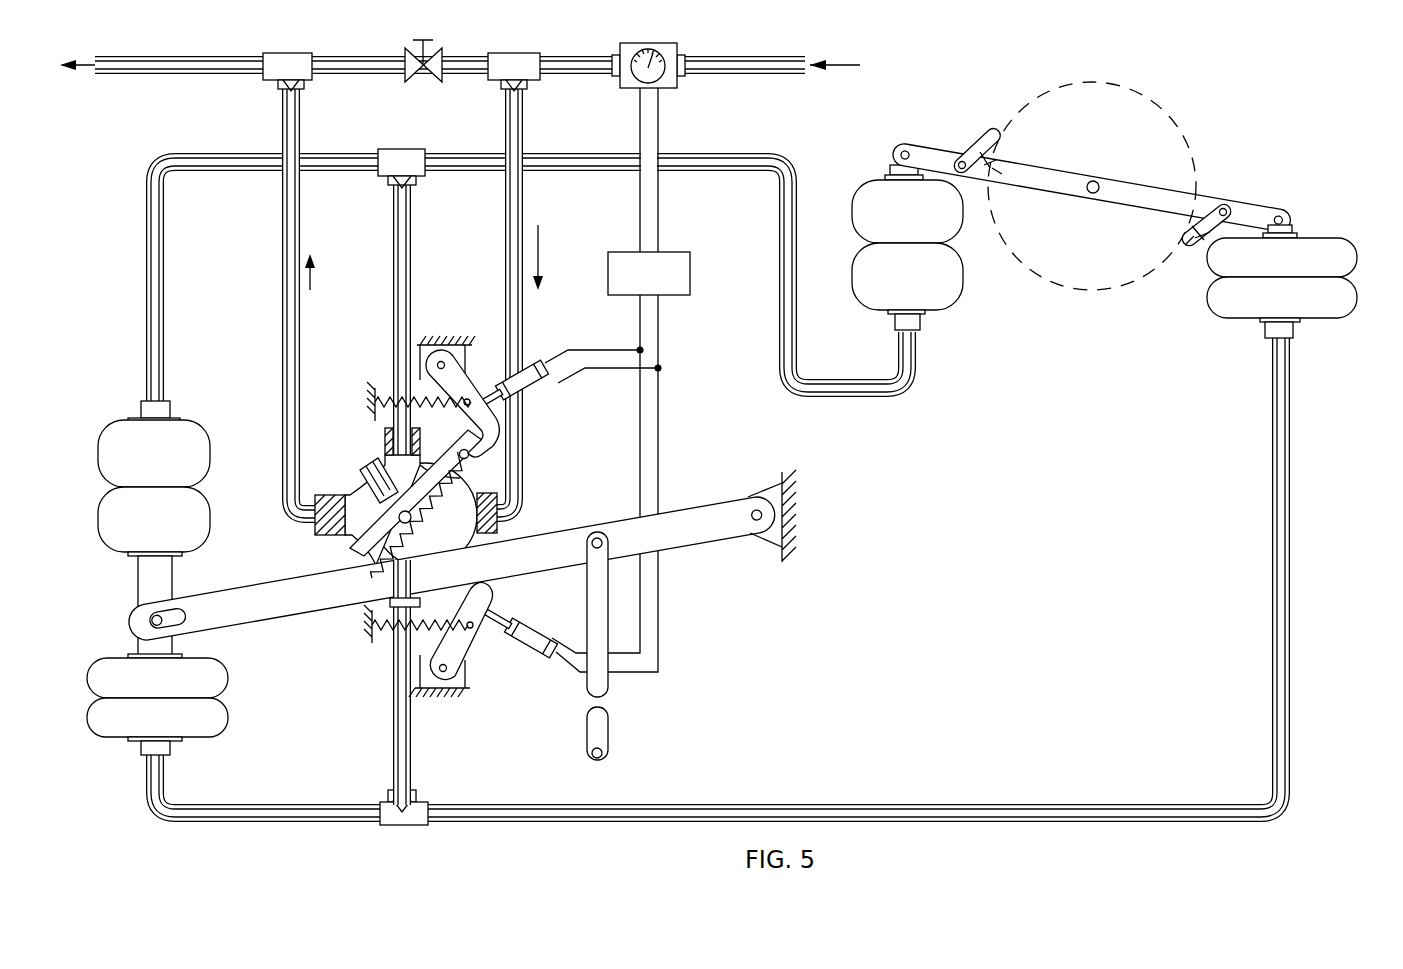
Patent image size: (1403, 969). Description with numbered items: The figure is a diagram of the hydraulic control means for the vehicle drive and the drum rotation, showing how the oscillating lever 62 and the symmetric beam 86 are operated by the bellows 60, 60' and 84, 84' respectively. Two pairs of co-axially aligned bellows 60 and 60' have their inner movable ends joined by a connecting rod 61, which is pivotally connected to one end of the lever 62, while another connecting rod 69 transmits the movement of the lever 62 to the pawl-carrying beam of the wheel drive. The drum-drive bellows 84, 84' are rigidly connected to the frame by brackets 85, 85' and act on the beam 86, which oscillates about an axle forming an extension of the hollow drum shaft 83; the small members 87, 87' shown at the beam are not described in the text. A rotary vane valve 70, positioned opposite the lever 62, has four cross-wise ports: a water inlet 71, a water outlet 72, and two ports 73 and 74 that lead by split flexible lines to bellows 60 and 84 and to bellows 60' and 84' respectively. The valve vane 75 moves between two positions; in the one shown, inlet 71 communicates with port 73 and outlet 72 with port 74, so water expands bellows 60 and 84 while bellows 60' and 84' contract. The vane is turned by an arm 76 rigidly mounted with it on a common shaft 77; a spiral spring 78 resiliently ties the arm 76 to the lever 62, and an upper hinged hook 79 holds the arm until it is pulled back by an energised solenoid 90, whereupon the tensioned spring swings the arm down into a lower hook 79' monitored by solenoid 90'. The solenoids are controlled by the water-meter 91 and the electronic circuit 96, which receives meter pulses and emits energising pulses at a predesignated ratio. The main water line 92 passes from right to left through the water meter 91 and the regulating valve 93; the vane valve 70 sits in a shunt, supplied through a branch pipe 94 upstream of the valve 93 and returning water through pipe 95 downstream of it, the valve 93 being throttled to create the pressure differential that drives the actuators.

The bellows 60 is at (179, 478).
The bellows 60' is at (190, 704).
The connecting rod 61 is at (145, 590).
The oscillating lever 62 is at (283, 604).
The connecting rod 69 is at (602, 724).
The rotary vane valve 70 is at (340, 535).
The water inlet 71 is at (500, 523).
The water outlet 72 is at (312, 520).
The port 73 is at (392, 442).
The port 74 is at (420, 603).
The valve vane 75 is at (368, 478).
The arm 76 is at (436, 478).
The common shaft 77 is at (415, 522).
The spiral spring 78 is at (468, 477).
The upper hinged hook 79 is at (438, 396).
The lower hinged hook 79' is at (443, 639).
The hollow drum shaft 83 is at (1096, 182).
The bellows 84 is at (890, 239).
The bellows 84' is at (1305, 273).
The bracket 85 is at (925, 340).
The bracket 85' is at (1259, 348).
The symmetric beam 86 is at (1150, 192).
The pivot lever 87 is at (977, 135).
The pivot lever 87' is at (1219, 205).
The solenoid 90 is at (567, 368).
The solenoid 90' is at (530, 657).
The water-meter 91 is at (668, 46).
The main water line 92 is at (750, 62).
The regulating valve 93 is at (408, 60).
The pipe 94 is at (505, 262).
The pipe 95 is at (282, 262).
The electronic circuit 96 is at (686, 270).